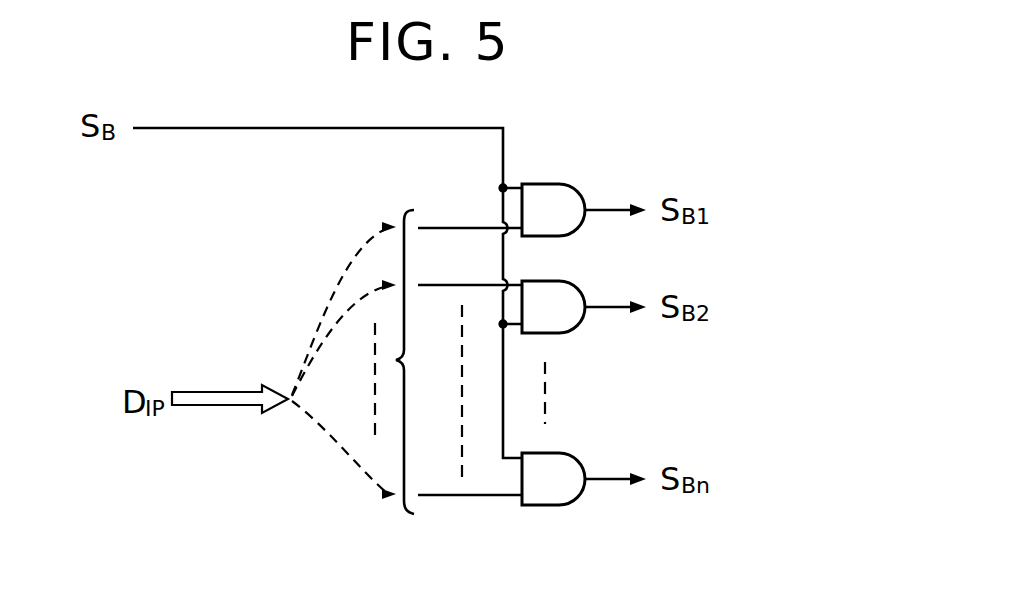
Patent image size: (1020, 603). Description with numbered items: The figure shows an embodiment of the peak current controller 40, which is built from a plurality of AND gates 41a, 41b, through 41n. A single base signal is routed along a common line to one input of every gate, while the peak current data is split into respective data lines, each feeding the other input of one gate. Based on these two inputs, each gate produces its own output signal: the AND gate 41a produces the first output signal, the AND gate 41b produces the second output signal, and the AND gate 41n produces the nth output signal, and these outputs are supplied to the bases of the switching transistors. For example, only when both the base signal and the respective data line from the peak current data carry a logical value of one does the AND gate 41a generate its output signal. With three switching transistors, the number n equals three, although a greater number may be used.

The peak current controller 40 is at (573, 124).
The AND gate 41a is at (553, 182).
The AND gate 41b is at (553, 280).
The AND gate 41n is at (553, 452).